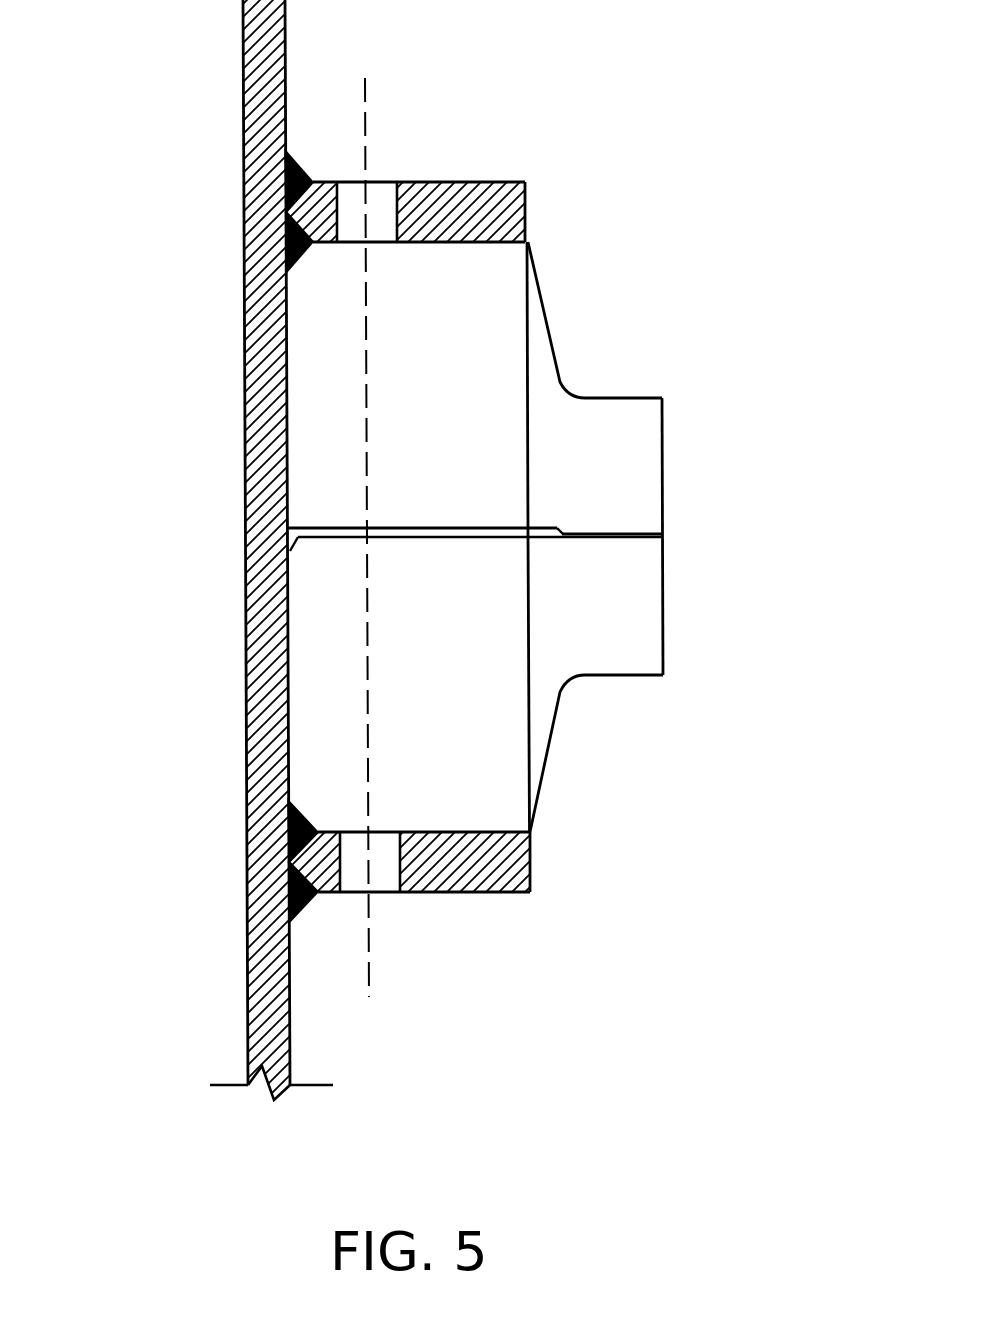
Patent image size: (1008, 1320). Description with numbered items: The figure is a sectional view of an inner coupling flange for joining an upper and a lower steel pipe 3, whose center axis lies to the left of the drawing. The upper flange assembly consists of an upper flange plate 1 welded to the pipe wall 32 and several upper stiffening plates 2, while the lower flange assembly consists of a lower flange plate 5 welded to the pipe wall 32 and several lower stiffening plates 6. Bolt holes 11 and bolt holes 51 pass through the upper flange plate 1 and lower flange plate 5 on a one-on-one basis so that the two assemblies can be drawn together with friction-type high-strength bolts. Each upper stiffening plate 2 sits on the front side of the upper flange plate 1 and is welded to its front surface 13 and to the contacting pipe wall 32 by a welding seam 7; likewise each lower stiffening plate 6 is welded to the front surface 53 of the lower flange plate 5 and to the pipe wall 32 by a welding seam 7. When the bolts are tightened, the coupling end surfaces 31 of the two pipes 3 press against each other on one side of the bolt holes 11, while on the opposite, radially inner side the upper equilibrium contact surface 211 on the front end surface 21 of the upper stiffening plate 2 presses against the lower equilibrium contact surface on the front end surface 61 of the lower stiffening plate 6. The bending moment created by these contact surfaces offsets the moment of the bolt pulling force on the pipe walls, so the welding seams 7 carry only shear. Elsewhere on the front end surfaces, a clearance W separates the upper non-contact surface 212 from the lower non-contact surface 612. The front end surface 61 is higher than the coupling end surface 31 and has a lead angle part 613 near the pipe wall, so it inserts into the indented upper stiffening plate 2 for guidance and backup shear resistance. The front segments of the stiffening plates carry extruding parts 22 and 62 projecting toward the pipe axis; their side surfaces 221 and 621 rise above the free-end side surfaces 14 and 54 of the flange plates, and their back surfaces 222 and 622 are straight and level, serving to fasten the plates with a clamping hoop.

The upper flange plate 1 is at (455, 200).
The bolt holes 11 is at (375, 176).
The front surface 13 is at (490, 228).
The free-end side surface 14 is at (528, 193).
The upper stiffening plates 2 is at (513, 333).
The front end surface 21 is at (423, 528).
The upper equilibrium contact surface 211 is at (604, 523).
The upper non-contact surface 212 is at (481, 529).
The extruding part 22 is at (648, 488).
The side surface 221 is at (663, 432).
The back surface 222 is at (612, 398).
The steel pipe 3 is at (245, 357).
The coupling end surface 31 is at (250, 590).
The pipe wall 32 is at (288, 34).
The lower flange plate 5 is at (470, 872).
The bolt holes 51 is at (382, 868).
The front surface 53 is at (498, 833).
The free-end side surface 54 is at (530, 858).
The lower stiffening plates 6 is at (612, 628).
The front end surface 61 is at (466, 545).
The lower non-contact surface 612 is at (388, 538).
The lead angle part 613 is at (292, 542).
The extruding part 62 is at (645, 618).
The side surface 621 is at (663, 582).
The back surface 622 is at (640, 678).
The welding seam 7 is at (294, 388).
The clearance W is at (437, 538).